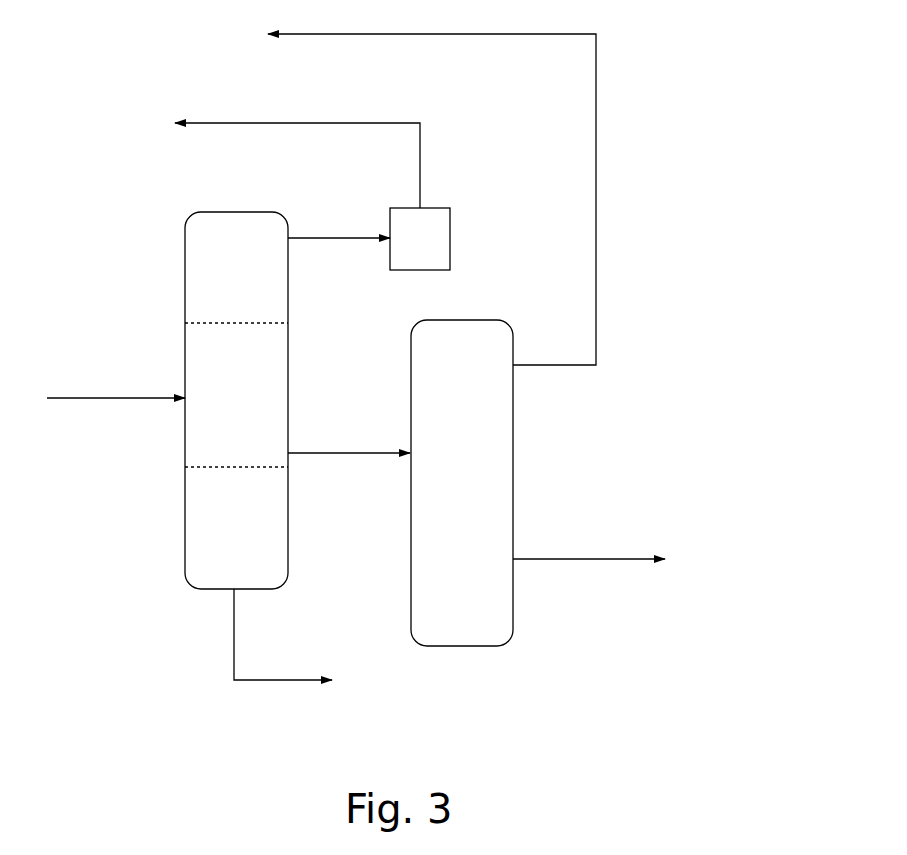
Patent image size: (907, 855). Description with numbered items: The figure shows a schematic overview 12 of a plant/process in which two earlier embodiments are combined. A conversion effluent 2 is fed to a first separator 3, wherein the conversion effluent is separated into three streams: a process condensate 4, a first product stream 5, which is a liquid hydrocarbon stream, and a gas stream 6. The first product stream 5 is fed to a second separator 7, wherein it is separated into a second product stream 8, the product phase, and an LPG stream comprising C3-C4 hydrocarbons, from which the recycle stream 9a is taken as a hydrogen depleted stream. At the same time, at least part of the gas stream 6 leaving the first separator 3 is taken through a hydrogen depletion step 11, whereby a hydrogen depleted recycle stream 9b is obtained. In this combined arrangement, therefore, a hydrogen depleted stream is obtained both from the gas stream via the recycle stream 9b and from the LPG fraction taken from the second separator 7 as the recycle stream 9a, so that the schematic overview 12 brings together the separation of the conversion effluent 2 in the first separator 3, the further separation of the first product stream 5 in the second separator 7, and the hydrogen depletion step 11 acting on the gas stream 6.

The conversion effluent 2 is at (99, 398).
The first separator 3 is at (188, 213).
The process condensate 4 is at (268, 682).
The first product stream 5 is at (332, 455).
The gas stream 6 is at (335, 240).
The second separator 7 is at (447, 648).
The second product stream 8 is at (566, 561).
The recycle stream 9a is at (596, 240).
The H2 depleted recycle stream 9b is at (226, 122).
The H2 depletion step 11 is at (450, 237).
The schematic overview 12 is at (721, 192).